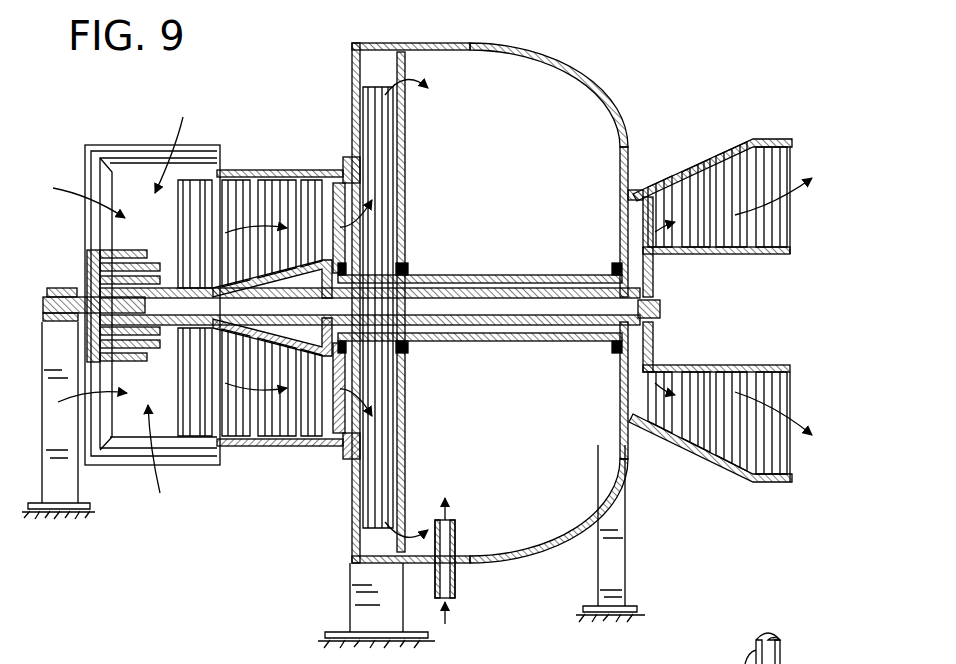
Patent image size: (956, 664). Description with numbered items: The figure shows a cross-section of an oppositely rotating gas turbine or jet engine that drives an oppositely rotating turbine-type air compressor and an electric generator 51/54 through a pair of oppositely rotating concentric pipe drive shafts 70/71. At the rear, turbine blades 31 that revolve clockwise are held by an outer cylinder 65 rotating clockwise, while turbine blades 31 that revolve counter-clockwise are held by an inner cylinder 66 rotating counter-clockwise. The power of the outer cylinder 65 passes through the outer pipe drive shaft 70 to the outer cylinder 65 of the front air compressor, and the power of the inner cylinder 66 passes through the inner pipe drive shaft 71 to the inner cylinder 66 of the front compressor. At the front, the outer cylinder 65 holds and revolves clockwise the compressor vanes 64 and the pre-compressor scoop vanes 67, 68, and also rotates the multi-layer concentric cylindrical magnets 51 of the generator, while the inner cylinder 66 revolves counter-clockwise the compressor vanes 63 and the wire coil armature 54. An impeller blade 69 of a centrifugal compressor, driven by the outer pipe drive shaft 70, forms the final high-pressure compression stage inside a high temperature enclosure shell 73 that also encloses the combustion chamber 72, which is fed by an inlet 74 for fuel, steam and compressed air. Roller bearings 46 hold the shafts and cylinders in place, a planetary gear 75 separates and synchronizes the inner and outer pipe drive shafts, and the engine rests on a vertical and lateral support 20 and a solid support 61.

The vertical and lateral support 20 is at (363, 612).
The turbine blade 31 is at (733, 220).
The roller bearing 46 is at (72, 288).
The multi-layer concentric cylindrical magnets 51 is at (115, 248).
The multi-layer concentric cylindrical wire coil armature 54 is at (158, 402).
The solid support 61 is at (642, 612).
The compressor vanes 63 is at (208, 215).
The compressor vanes 64 is at (233, 410).
The outer cylinder 65 is at (313, 170).
The inner cylinder 66 is at (263, 282).
The pre-compressor scoop vanes 67 is at (140, 152).
The pre-compressor scoop vanes 68 is at (100, 187).
The impeller blade 69 is at (382, 143).
The outer pipe drive shaft 70 is at (452, 275).
The inner pipe drive shaft 71 is at (518, 292).
The combustion chamber 72 is at (517, 130).
The high temperature enclosure shell 73 is at (607, 110).
The inlet 74 is at (457, 590).
The planetary gear 75 is at (612, 340).